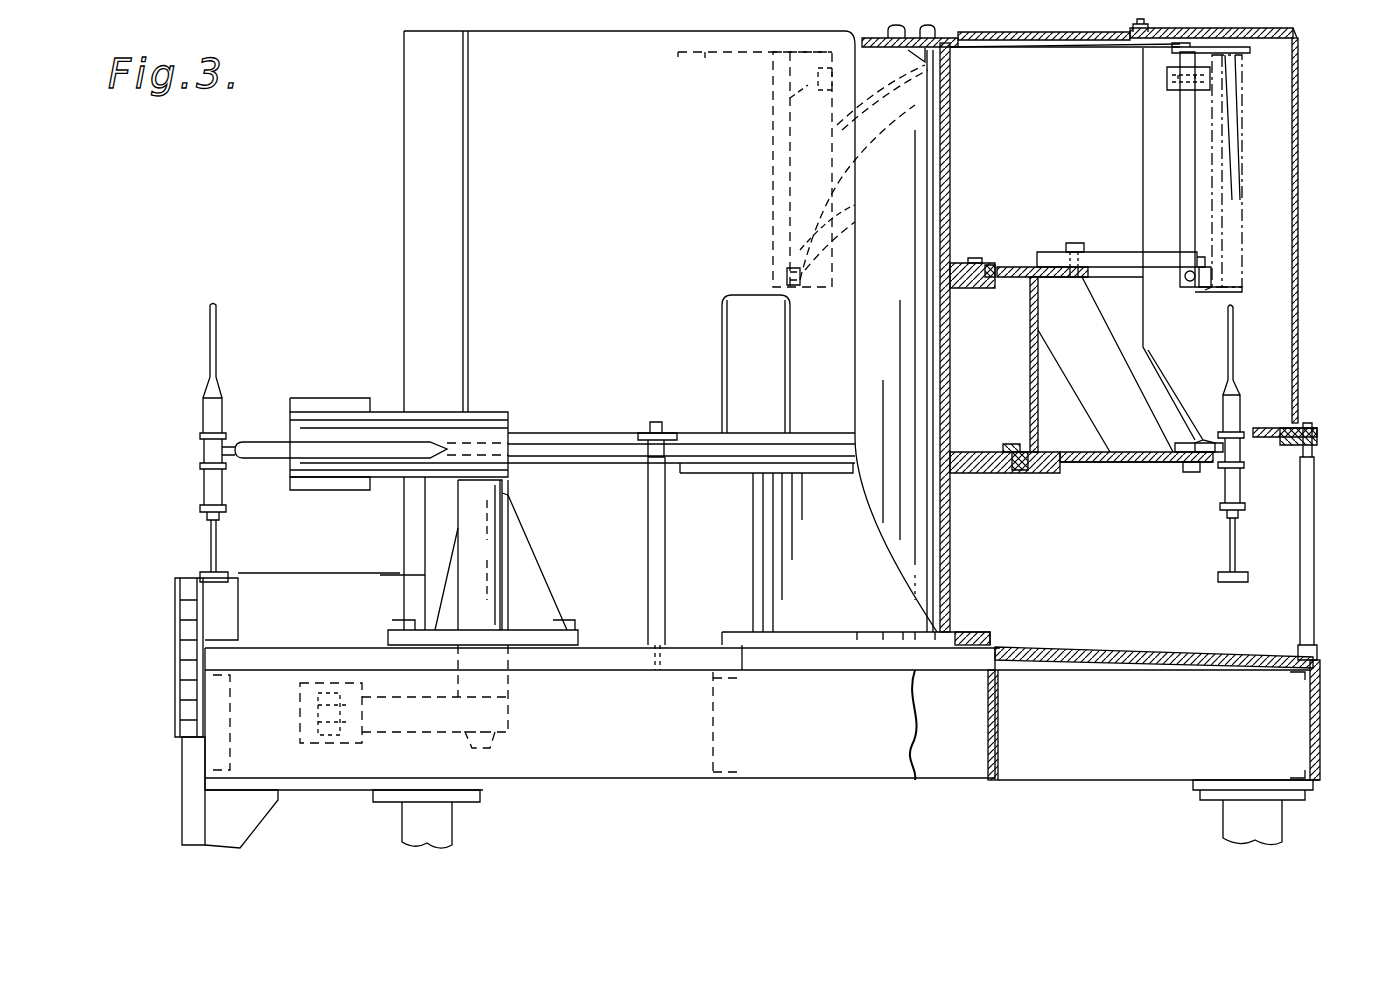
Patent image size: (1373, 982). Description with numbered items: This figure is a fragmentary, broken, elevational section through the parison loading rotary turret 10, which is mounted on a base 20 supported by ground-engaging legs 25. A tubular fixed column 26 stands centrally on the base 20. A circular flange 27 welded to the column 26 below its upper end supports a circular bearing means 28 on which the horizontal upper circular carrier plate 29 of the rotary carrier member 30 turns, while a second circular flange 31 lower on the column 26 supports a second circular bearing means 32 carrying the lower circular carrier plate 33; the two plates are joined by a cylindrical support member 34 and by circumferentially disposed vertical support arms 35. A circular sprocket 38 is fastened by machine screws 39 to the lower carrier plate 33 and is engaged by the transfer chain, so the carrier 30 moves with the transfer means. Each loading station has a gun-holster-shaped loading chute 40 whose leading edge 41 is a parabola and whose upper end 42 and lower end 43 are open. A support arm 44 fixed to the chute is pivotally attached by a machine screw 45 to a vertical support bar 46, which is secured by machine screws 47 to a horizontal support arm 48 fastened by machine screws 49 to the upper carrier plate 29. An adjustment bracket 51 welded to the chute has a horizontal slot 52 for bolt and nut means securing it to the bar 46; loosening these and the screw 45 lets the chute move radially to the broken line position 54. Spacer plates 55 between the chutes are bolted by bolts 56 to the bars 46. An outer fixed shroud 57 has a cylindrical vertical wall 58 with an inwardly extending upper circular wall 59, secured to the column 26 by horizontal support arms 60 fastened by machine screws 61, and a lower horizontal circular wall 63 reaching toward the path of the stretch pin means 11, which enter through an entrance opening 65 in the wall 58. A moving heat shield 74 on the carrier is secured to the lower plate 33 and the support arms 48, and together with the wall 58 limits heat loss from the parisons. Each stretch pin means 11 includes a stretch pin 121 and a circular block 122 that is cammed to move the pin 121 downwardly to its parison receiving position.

The parison loading rotary turret 10 is at (1296, 245).
The stretch pin means 11 is at (200, 410).
The base 20 is at (1098, 778).
The ground-engaging legs 25 is at (452, 830).
The tubular fixed column 26 is at (952, 550).
The circular flange 27 is at (968, 290).
The circular bearing means 28 is at (995, 270).
The upper circular carrier plate 29 is at (1018, 268).
The rotary carrier member 30 is at (1108, 238).
The second circular flange 31 is at (983, 452).
The second circular bearing means 32 is at (1022, 470).
The lower circular carrier plate 33 is at (1085, 462).
The cylindrical support member 34 is at (1030, 362).
The vertical support arms 35 is at (1090, 378).
The circular sprocket 38 is at (1208, 452).
The machine screws 39 is at (1185, 475).
The loading chute 40 is at (858, 132).
The leading edge 41 is at (858, 112).
The upper end 42 is at (773, 64).
The lower end 43 is at (795, 300).
The support arm 44 is at (1205, 290).
The machine screw 45 is at (780, 272).
The vertical support bar 46 is at (835, 275).
The machine screws 47 is at (835, 228).
The horizontal support arm 48 is at (830, 208).
The machine screws 49 is at (1068, 245).
The adjustment bracket 51 is at (790, 98).
The horizontal slot 52 is at (1170, 72).
The broken line position 54 is at (1255, 130).
The spacer plate 55 is at (703, 68).
The bolts 56 is at (1180, 44).
The outer fixed shroud 57 is at (1300, 398).
The outer cylindrical vertical wall 58 is at (1297, 375).
The circular wall 59 is at (1282, 33).
The horizontal support arms 60 is at (1070, 42).
The machine screws 61 is at (912, 30).
The lower horizontal circular wall 63 is at (1272, 448).
The entrance opening 65 is at (778, 400).
The moving heat shield 74 is at (1188, 358).
The stretch pin 121 is at (208, 356).
The circular block 122 is at (235, 580).